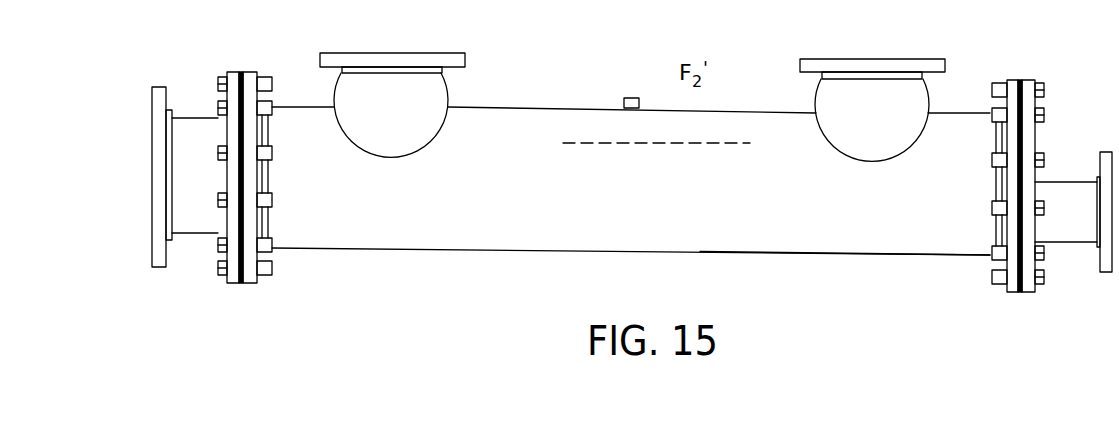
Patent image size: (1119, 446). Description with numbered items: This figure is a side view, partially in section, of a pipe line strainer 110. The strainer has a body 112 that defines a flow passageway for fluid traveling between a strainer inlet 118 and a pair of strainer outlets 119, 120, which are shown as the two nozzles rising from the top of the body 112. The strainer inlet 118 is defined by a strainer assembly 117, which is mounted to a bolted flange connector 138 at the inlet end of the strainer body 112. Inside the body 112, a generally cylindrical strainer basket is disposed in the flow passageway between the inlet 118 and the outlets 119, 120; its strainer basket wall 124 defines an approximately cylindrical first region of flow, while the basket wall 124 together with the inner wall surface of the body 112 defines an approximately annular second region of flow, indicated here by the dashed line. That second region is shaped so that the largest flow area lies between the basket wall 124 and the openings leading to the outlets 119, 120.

The pipe line strainer 110 is at (808, 303).
The body 112 is at (915, 255).
The strainer assembly 117 is at (190, 237).
The strainer inlet 118 is at (149, 212).
The strainer outlet 119 is at (450, 52).
The strainer outlet 120 is at (918, 57).
The strainer basket wall 124 is at (687, 90).
The bolted flange connector 138 is at (250, 70).